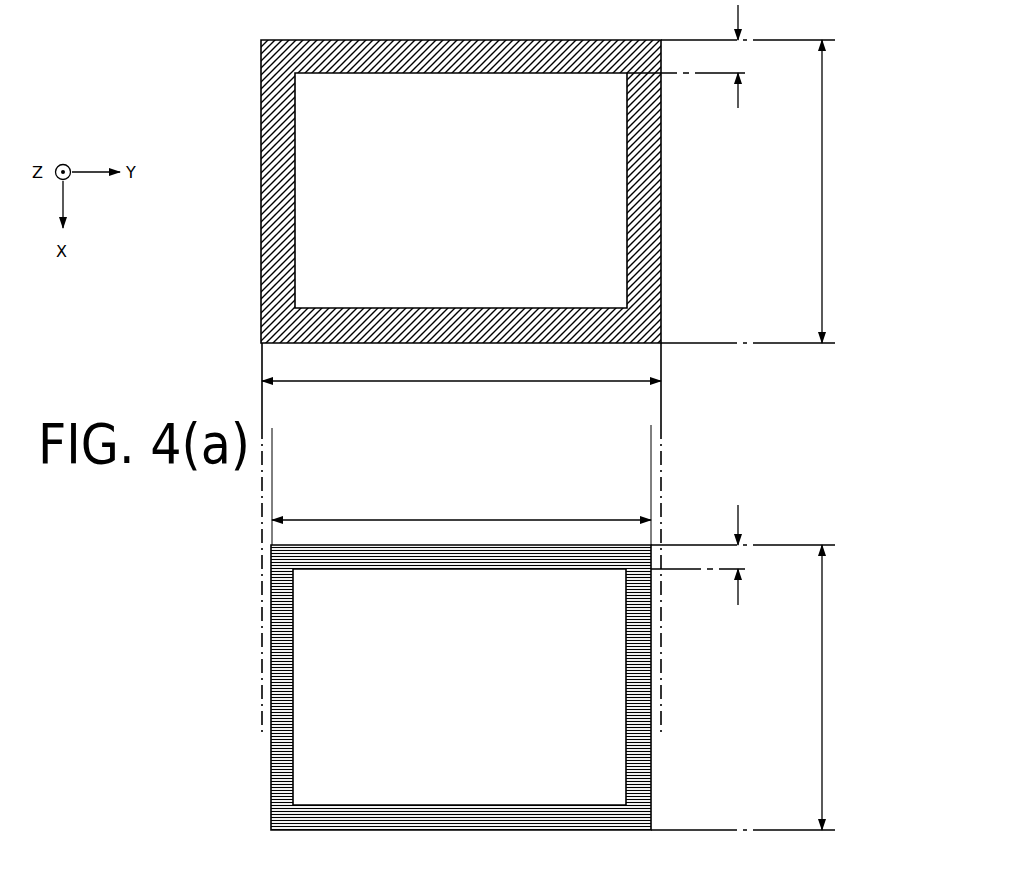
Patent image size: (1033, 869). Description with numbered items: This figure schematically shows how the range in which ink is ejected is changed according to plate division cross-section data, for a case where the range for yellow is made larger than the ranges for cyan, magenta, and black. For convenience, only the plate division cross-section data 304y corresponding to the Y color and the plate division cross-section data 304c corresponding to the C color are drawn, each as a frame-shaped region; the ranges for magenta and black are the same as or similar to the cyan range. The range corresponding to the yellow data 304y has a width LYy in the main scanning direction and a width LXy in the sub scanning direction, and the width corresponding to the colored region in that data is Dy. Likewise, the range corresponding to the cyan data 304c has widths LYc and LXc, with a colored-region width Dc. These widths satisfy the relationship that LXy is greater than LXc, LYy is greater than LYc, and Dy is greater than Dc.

The plate division cross-section data corresponding to Y color 304y is at (272, 192).
The plate division cross-section data corresponding to C color 304c is at (288, 772).
The width in the main scanning direction of the Y-color range LYy is at (461, 395).
The width in the main scanning direction of the C-color range LYc is at (461, 504).
The width in the sub scanning direction of the Y-color range LXy is at (842, 191).
The width in the sub scanning direction of the C-color range LXc is at (842, 687).
The width corresponding to the colored region in the Y-color data Dy is at (761, 56).
The width corresponding to the colored region in the C-color data Dc is at (760, 555).